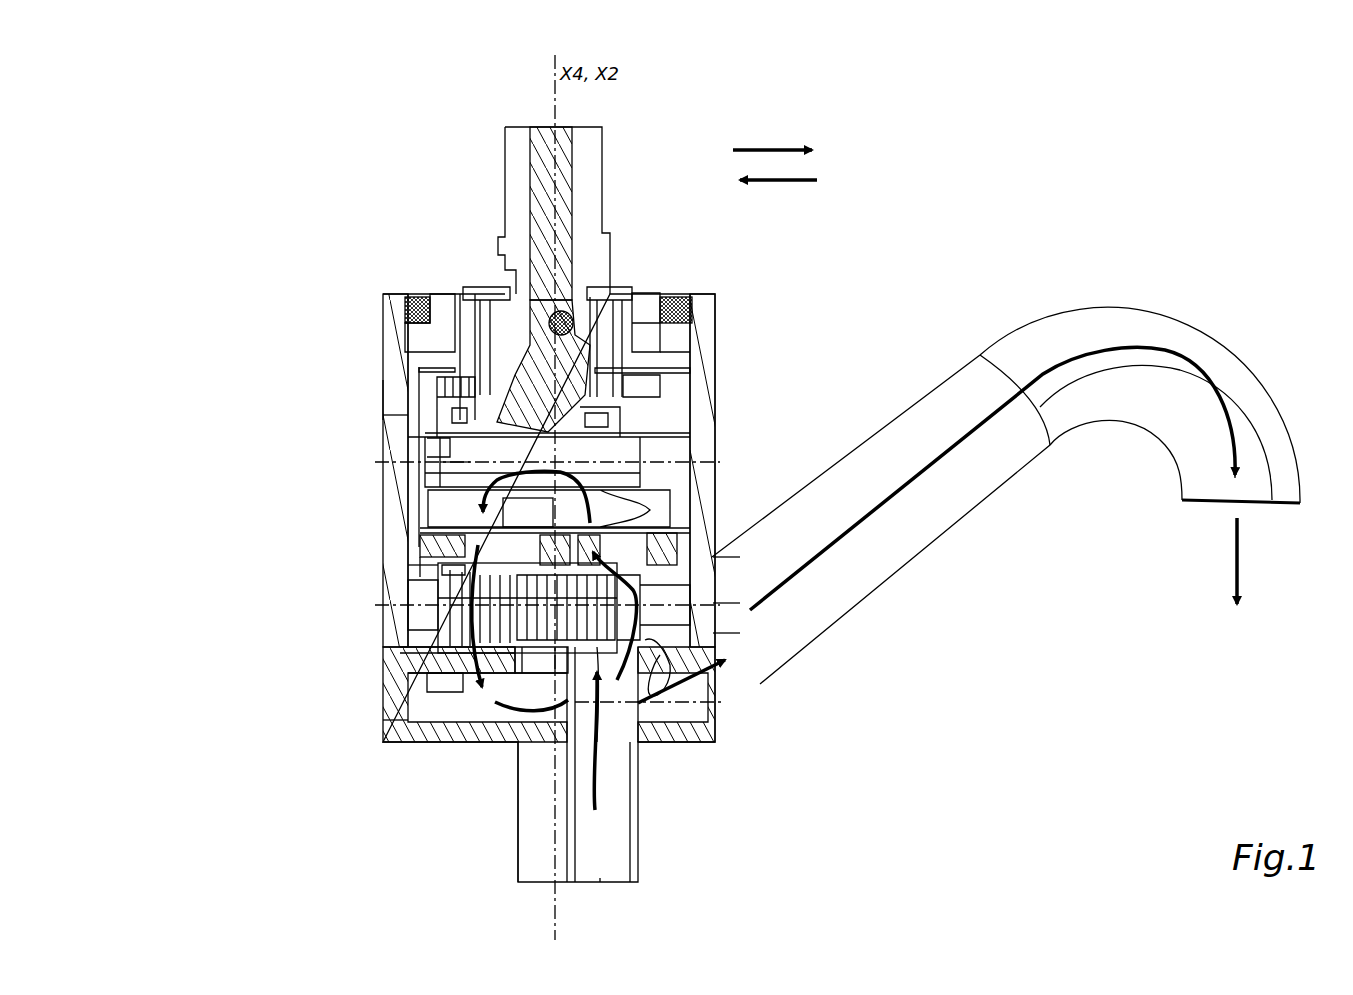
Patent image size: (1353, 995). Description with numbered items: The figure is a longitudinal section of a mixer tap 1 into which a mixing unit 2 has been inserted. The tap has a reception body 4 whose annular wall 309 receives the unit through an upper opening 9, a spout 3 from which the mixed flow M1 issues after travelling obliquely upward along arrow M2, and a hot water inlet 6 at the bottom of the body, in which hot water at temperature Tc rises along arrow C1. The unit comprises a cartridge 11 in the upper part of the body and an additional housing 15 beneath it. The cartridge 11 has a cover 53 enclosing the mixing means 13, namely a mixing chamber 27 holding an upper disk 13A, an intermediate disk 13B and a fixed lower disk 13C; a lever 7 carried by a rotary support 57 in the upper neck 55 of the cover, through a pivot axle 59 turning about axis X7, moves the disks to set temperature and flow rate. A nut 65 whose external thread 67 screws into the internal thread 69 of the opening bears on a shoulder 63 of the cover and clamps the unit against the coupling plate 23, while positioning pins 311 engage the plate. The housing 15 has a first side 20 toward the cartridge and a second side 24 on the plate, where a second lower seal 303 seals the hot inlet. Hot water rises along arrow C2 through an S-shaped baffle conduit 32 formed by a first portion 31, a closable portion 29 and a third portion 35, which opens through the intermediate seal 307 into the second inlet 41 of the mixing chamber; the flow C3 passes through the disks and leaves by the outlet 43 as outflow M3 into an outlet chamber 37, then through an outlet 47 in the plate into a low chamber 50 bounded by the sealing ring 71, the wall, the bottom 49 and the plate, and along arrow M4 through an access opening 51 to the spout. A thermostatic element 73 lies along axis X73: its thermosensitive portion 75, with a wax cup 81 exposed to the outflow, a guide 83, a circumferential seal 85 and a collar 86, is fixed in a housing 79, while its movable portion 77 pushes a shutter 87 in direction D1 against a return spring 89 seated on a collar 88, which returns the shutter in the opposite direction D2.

The mixer tap 1 is at (890, 250).
The mixing unit 2 is at (265, 365).
The spout 3 is at (1122, 318).
The reception body 4 is at (383, 417).
The hot water inlet 6 is at (622, 820).
The lever 7 is at (513, 138).
The upper opening 9 is at (690, 310).
The cartridge 11 is at (408, 369).
The mixing means 13 is at (820, 278).
The upper disk 13A is at (640, 397).
The intermediate disk 13B is at (640, 427).
The lower disk 13C is at (712, 502).
The additional housing 15 is at (383, 557).
The first side 20 is at (440, 434).
The coupling plate 23 is at (444, 694).
The second side 24 is at (517, 802).
The mixing chamber 27 is at (660, 370).
The closable portion 29 is at (713, 603).
The first portion 31 is at (713, 633).
The baffle conduit 32 is at (972, 552).
The third portion 35 is at (713, 557).
The outlet chamber 37 is at (520, 643).
The second inlet 41 is at (700, 470).
The outlet 43 is at (440, 460).
The outlet 47 is at (560, 735).
The bottom 49 is at (406, 741).
The low chamber 50 is at (420, 695).
The access opening 51 is at (652, 741).
The cover 53 is at (441, 338).
The upper neck 55 is at (635, 303).
The rotary support 57 is at (495, 298).
The pivot axle 59 is at (552, 308).
The shoulder 63 is at (700, 328).
The nut 65 is at (672, 305).
The external thread 67 is at (430, 310).
The internal thread 69 is at (412, 332).
The sealing ring 71 is at (408, 570).
The thermostatic element 73 is at (181, 588).
The thermosensitive portion 75 is at (221, 648).
The movable portion 77 is at (455, 608).
The housing 79 is at (543, 512).
The cup 81 is at (480, 618).
The guide 83 is at (490, 630).
The circumferential seal 85 is at (505, 640).
The collar 86 is at (418, 587).
The shutter 87 is at (438, 596).
The collar 88 is at (690, 607).
The return spring 89 is at (577, 773).
The second lower seal 303 is at (680, 672).
The intermediate seal 307 is at (555, 552).
The annular wall 309 is at (630, 412).
The positioning pins 311 is at (440, 673).
The hot water inflow C1 is at (601, 753).
The second inflow C2 is at (612, 601).
The hot inflow in disks C3 is at (530, 572).
The direction D1 is at (772, 133).
The direction 2 D2 is at (778, 198).
The mixed flow M1 is at (1265, 572).
The mixed flow in spout M2 is at (1214, 463).
The outflow M3 is at (528, 694).
The outflow in low chamber M4 is at (703, 678).
The hot water temperature Tc is at (605, 868).
The pivot axis X7 is at (570, 312).
The first axis X73 is at (750, 610).